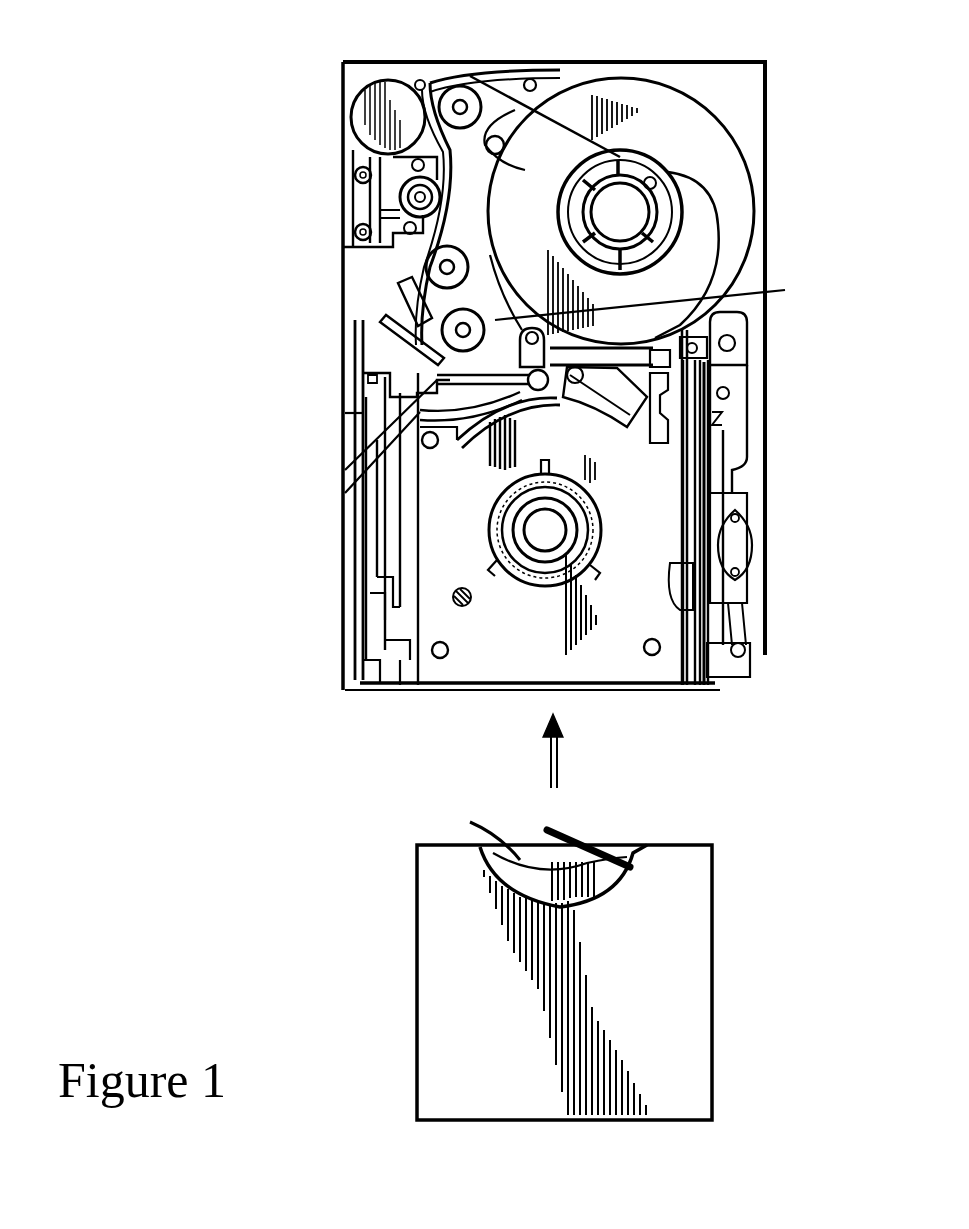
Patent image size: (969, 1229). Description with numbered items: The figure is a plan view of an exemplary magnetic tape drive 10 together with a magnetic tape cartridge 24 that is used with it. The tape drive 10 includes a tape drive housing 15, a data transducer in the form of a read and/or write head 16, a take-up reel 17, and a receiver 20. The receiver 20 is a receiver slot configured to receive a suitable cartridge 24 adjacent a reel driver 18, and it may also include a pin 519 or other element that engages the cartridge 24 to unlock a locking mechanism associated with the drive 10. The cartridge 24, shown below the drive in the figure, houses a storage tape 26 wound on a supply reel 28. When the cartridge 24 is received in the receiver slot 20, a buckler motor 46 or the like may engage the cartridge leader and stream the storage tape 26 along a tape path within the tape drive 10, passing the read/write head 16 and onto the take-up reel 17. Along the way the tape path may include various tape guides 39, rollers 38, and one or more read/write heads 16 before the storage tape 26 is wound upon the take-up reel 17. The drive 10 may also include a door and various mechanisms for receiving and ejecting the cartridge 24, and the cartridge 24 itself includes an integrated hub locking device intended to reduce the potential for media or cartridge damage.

The tape drive 10 is at (783, 325).
The tape drive housing 15 is at (768, 424).
The read/write head 16 is at (440, 204).
The take-up reel 17 is at (725, 175).
The reel driver 18 is at (488, 540).
The receiver 20 is at (668, 672).
The cartridge 24 is at (713, 927).
The storage tape 26 is at (557, 843).
The supply reel 28 is at (548, 848).
The rollers 38 is at (355, 352).
The tape guides 39 is at (470, 80).
The buckler motor 46 is at (345, 413).
The pin 519 is at (452, 602).